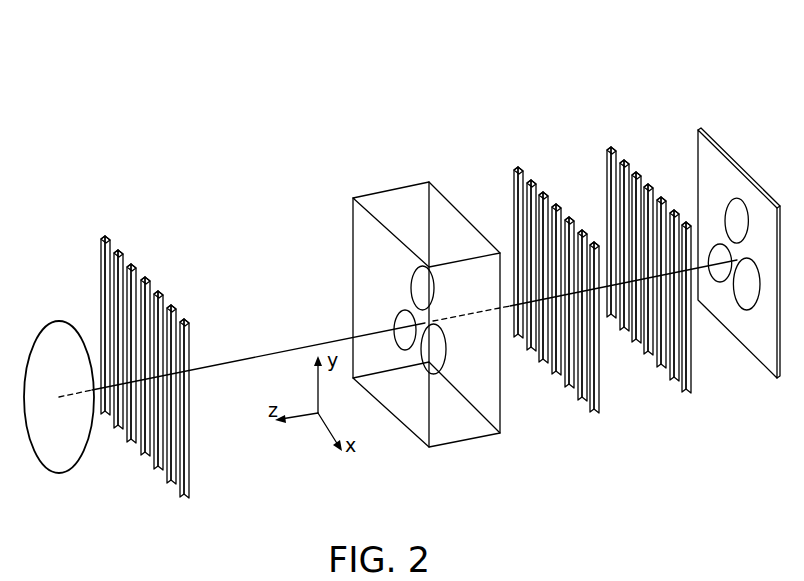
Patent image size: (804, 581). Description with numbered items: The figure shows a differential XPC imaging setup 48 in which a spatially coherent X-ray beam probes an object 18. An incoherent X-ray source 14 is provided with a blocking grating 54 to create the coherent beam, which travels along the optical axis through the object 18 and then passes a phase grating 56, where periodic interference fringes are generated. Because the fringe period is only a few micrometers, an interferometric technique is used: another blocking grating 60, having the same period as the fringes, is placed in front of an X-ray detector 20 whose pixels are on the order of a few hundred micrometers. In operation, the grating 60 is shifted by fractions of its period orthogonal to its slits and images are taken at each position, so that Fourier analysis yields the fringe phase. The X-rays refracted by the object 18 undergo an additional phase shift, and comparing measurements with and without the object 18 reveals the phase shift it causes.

The incoherent X-ray source 14 is at (60, 320).
The blocking grating 54 is at (106, 222).
The object 18 is at (401, 160).
The phase grating 56 is at (521, 140).
The blocking grating 60 is at (613, 122).
The X-ray detector 20 is at (704, 100).
The differential XPC imaging setup 48 is at (447, 63).